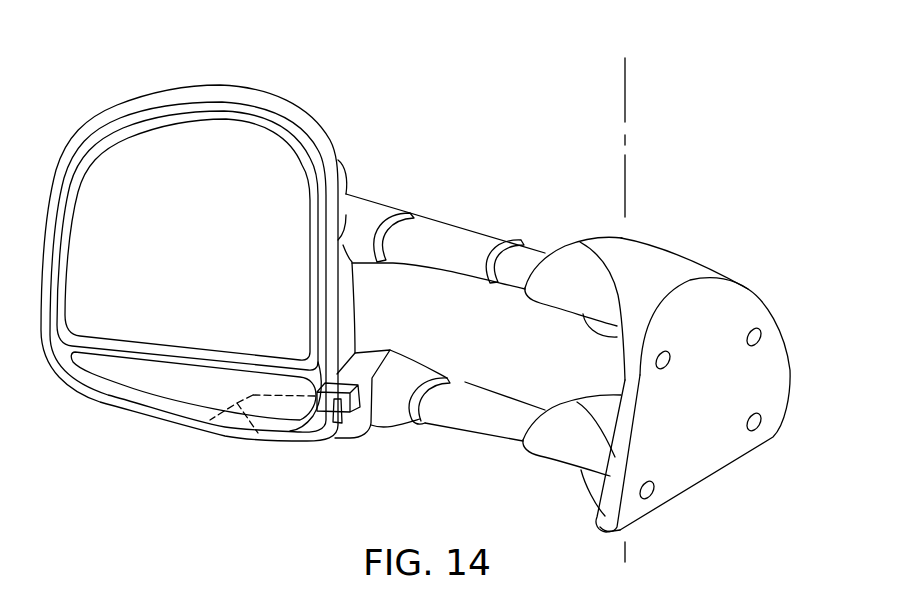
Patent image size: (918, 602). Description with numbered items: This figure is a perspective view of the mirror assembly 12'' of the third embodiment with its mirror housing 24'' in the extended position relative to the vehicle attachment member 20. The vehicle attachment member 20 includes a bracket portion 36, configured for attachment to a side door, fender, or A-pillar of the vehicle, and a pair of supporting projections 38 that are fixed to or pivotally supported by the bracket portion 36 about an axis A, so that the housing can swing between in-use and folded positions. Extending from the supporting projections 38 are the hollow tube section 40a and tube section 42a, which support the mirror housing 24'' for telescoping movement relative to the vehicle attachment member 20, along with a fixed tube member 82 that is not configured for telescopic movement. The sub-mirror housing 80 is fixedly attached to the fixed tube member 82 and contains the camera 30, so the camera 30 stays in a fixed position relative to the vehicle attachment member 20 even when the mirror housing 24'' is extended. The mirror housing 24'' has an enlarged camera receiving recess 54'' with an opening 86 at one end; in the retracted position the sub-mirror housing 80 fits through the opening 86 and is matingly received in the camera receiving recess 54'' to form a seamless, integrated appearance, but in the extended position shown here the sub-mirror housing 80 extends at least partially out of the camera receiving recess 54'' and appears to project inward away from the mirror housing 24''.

The mirror assembly 12'' is at (415, 300).
The mirror housing 24'' is at (196, 240).
The camera receiving recess 54'' is at (193, 404).
The opening 86 is at (257, 434).
The camera 30 is at (336, 428).
The sub-mirror housing 80 is at (388, 415).
The tube section 42a is at (462, 250).
The tube section 40a is at (517, 275).
The supporting projections 38 is at (553, 306).
The fixed tube member 82 is at (482, 412).
The vehicle attachment member 20 is at (678, 249).
The bracket portion 36 is at (717, 268).
The axis A is at (627, 95).